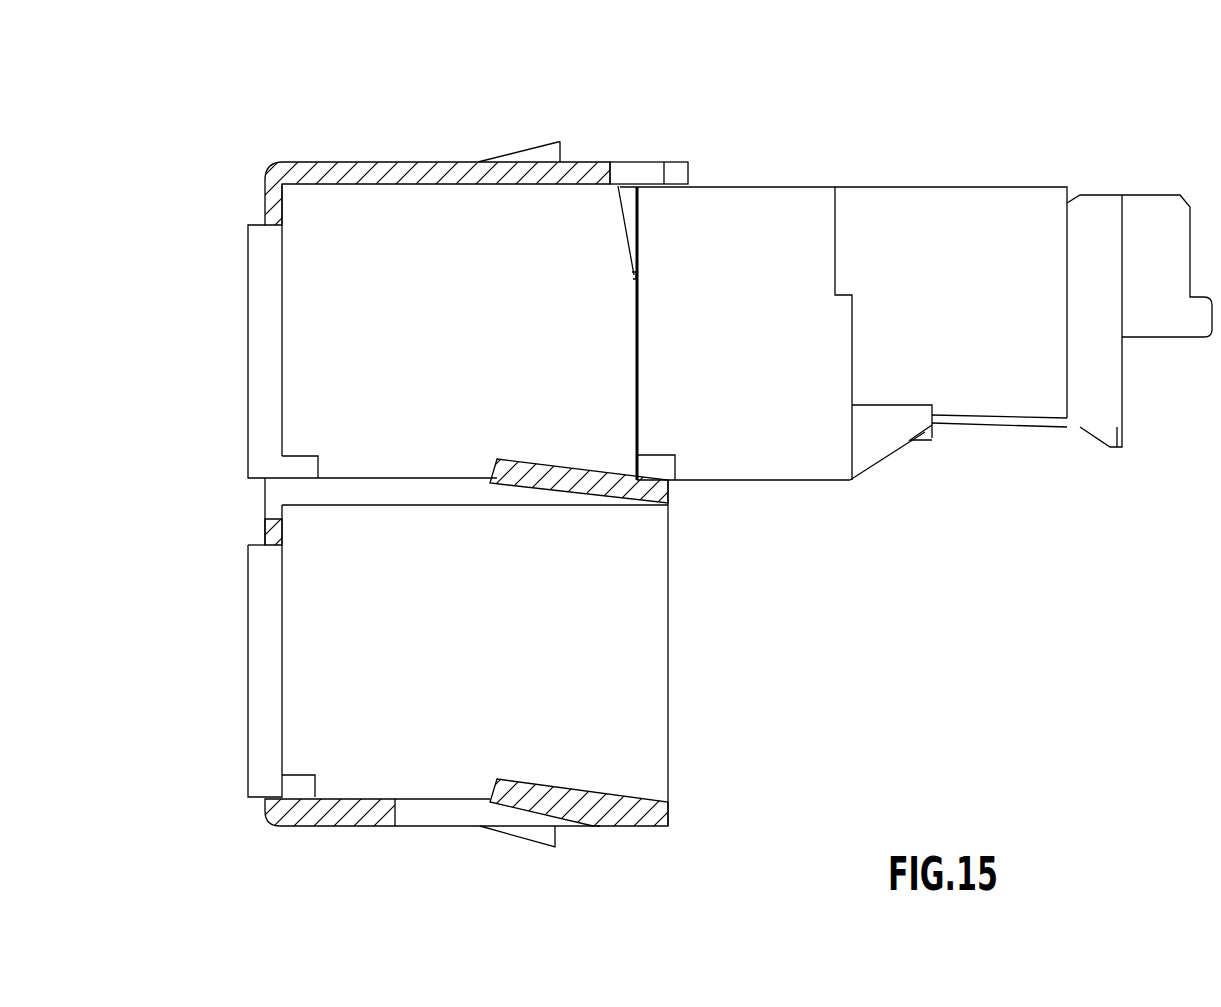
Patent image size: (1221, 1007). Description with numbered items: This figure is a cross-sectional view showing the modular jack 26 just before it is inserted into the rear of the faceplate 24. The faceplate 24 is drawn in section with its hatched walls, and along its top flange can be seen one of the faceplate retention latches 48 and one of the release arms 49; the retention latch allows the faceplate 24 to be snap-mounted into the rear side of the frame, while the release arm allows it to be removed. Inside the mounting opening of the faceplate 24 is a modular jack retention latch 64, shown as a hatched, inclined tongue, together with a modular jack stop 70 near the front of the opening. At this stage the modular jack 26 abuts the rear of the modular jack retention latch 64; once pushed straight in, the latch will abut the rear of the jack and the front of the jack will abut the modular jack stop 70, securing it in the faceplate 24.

The faceplate 24 is at (315, 163).
The modular jack 26 is at (775, 187).
The faceplate retention latch 48 is at (530, 143).
The release arm 49 is at (641, 162).
The modular jack retention latch 64 is at (518, 482).
The modular jack stop 70 is at (295, 469).